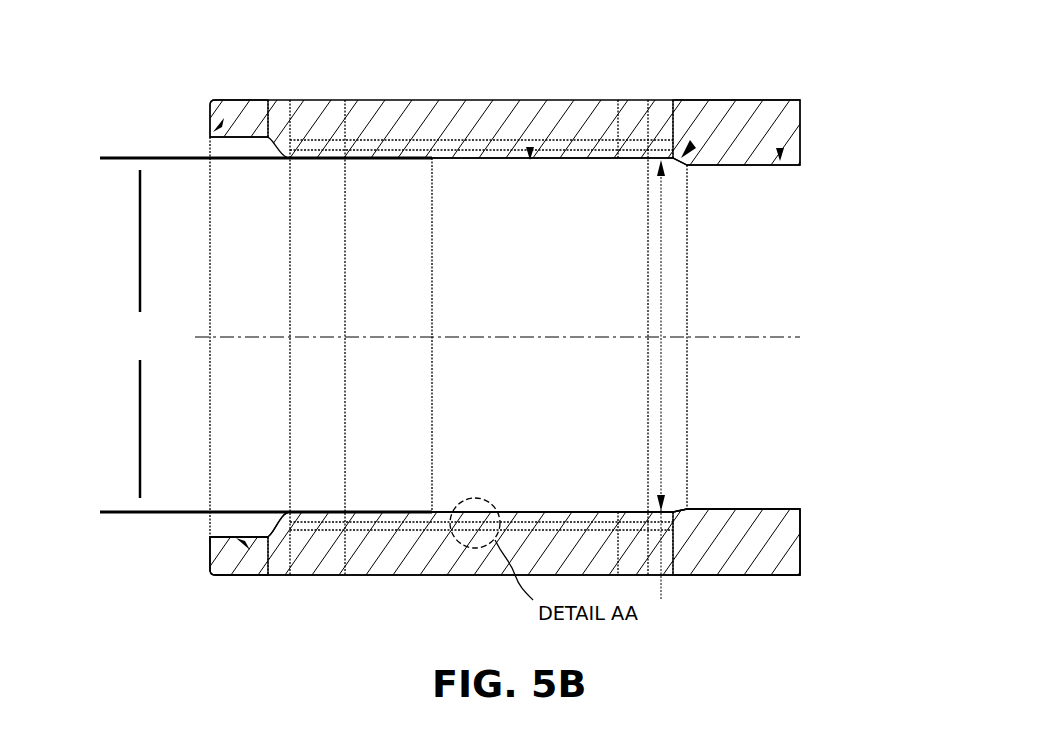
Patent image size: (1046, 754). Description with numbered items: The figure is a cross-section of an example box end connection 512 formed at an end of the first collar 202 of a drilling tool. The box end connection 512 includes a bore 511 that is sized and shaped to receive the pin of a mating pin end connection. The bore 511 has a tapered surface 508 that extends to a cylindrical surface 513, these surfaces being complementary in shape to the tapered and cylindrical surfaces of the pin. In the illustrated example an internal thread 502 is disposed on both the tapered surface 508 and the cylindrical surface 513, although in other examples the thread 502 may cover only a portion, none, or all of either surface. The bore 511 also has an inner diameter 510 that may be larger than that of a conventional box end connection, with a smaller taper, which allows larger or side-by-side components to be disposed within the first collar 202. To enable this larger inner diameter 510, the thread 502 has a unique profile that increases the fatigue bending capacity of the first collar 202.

The first collar 202 is at (265, 55).
The internal thread 502 is at (572, 515).
The tapered surface 508 is at (393, 158).
The inner diameter 510 is at (142, 334).
The bore 511 is at (187, 150).
The box end connection 512 is at (691, 56).
The cylindrical surface 513 is at (512, 158).